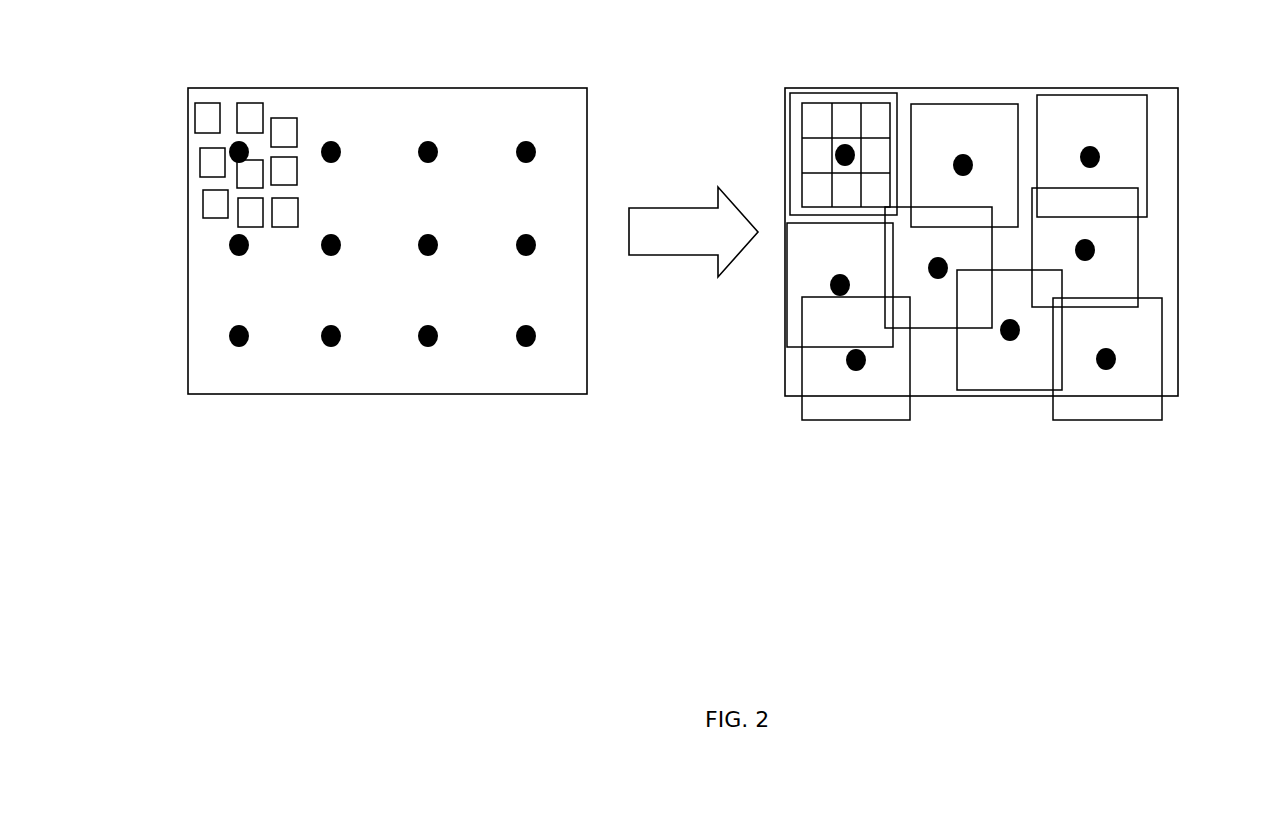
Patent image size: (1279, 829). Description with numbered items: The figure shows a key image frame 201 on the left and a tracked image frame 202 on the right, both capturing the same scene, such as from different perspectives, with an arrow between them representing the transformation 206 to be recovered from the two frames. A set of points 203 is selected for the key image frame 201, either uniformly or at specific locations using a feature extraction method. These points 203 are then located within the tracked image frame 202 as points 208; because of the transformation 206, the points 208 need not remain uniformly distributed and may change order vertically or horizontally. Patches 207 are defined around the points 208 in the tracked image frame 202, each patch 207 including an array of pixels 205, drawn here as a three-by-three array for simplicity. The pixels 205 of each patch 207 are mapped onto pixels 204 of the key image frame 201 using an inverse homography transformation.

The key image frame 201 is at (553, 103).
The tracked image frame 202 is at (1163, 105).
The points 203 is at (233, 147).
The pixels 204 is at (280, 127).
The pixels 205 is at (818, 118).
The transformation 206 is at (680, 212).
The patches 207 is at (1147, 367).
The points 208 is at (1106, 368).